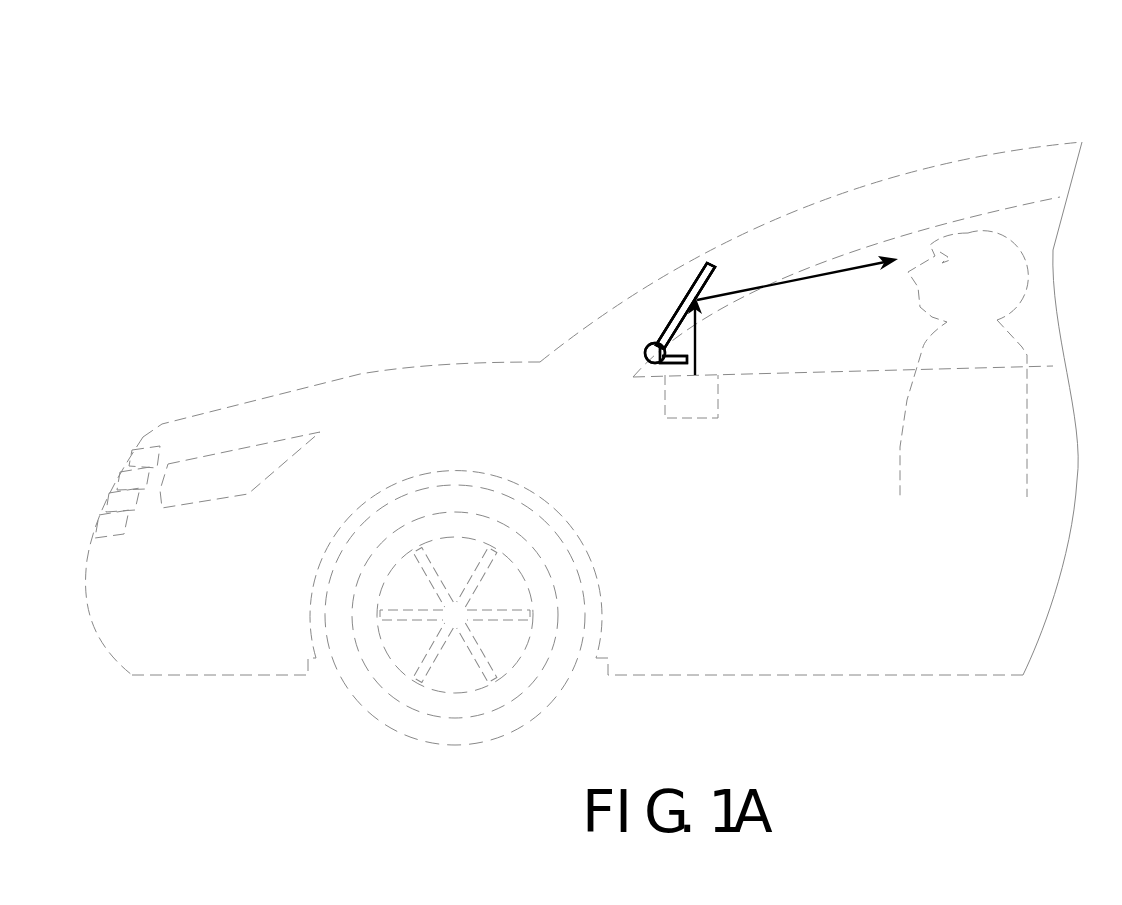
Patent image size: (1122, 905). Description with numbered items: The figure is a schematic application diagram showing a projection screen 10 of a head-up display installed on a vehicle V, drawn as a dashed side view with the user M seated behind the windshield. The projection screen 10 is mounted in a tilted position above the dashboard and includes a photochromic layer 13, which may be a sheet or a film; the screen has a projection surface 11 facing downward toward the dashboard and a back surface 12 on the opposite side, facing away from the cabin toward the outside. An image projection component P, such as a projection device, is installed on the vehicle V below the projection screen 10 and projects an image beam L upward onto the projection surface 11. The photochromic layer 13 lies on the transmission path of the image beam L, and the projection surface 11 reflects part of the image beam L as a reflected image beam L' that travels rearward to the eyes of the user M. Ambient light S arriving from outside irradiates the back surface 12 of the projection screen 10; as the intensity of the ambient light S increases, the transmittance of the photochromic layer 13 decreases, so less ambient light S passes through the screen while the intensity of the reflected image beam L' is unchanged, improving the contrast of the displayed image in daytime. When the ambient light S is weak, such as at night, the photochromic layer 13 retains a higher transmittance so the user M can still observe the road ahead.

The projection screen 10 is at (832, 80).
The projection surface 11 is at (742, 280).
The back surface 12 is at (689, 266).
The photochromic layer 13 is at (740, 285).
The ambient light S is at (641, 259).
The vehicle V is at (367, 390).
The user M is at (968, 248).
The image beam L is at (780, 542).
The reflected image beam L' is at (813, 160).
The image projection component P is at (692, 400).